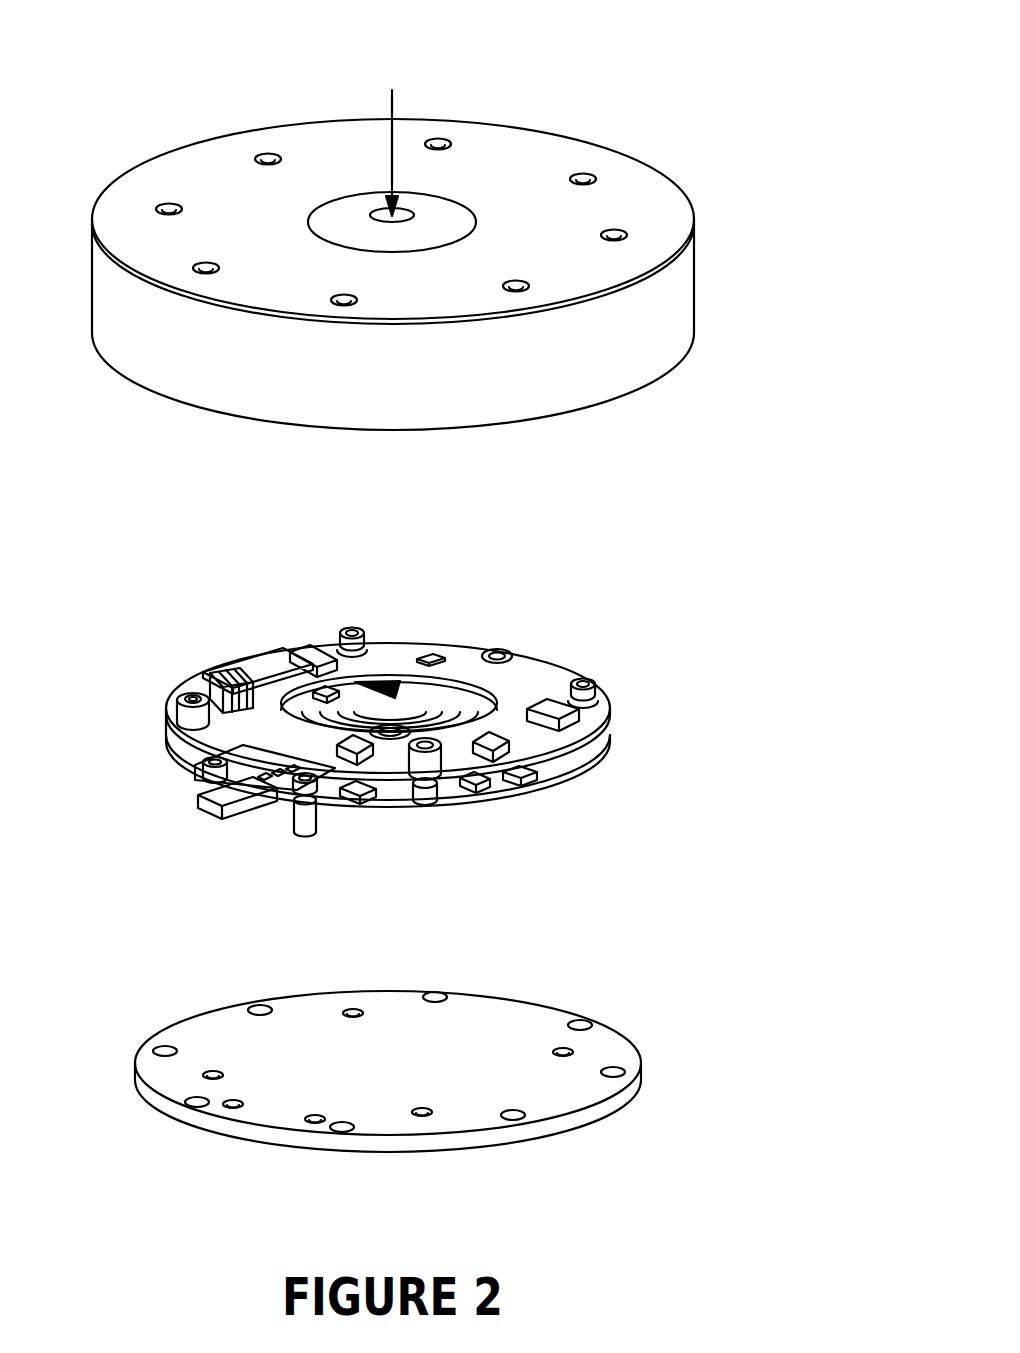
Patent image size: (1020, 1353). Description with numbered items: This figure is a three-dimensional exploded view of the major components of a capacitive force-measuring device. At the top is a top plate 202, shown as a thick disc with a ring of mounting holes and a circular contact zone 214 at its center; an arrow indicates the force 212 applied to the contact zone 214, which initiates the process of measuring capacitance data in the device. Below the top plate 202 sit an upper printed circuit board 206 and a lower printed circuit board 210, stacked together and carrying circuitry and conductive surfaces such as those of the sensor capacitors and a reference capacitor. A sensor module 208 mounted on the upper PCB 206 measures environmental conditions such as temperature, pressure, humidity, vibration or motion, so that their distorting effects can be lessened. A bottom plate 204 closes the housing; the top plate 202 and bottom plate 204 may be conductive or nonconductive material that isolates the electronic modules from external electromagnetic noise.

The top plate 202 is at (676, 290).
The bottom plate 204 is at (645, 1080).
The upper printed circuit board 206 is at (598, 706).
The sensor module 208 is at (427, 655).
The lower printed circuit board 210 is at (592, 748).
The force 212 is at (392, 118).
The contact zone 214 is at (350, 213).